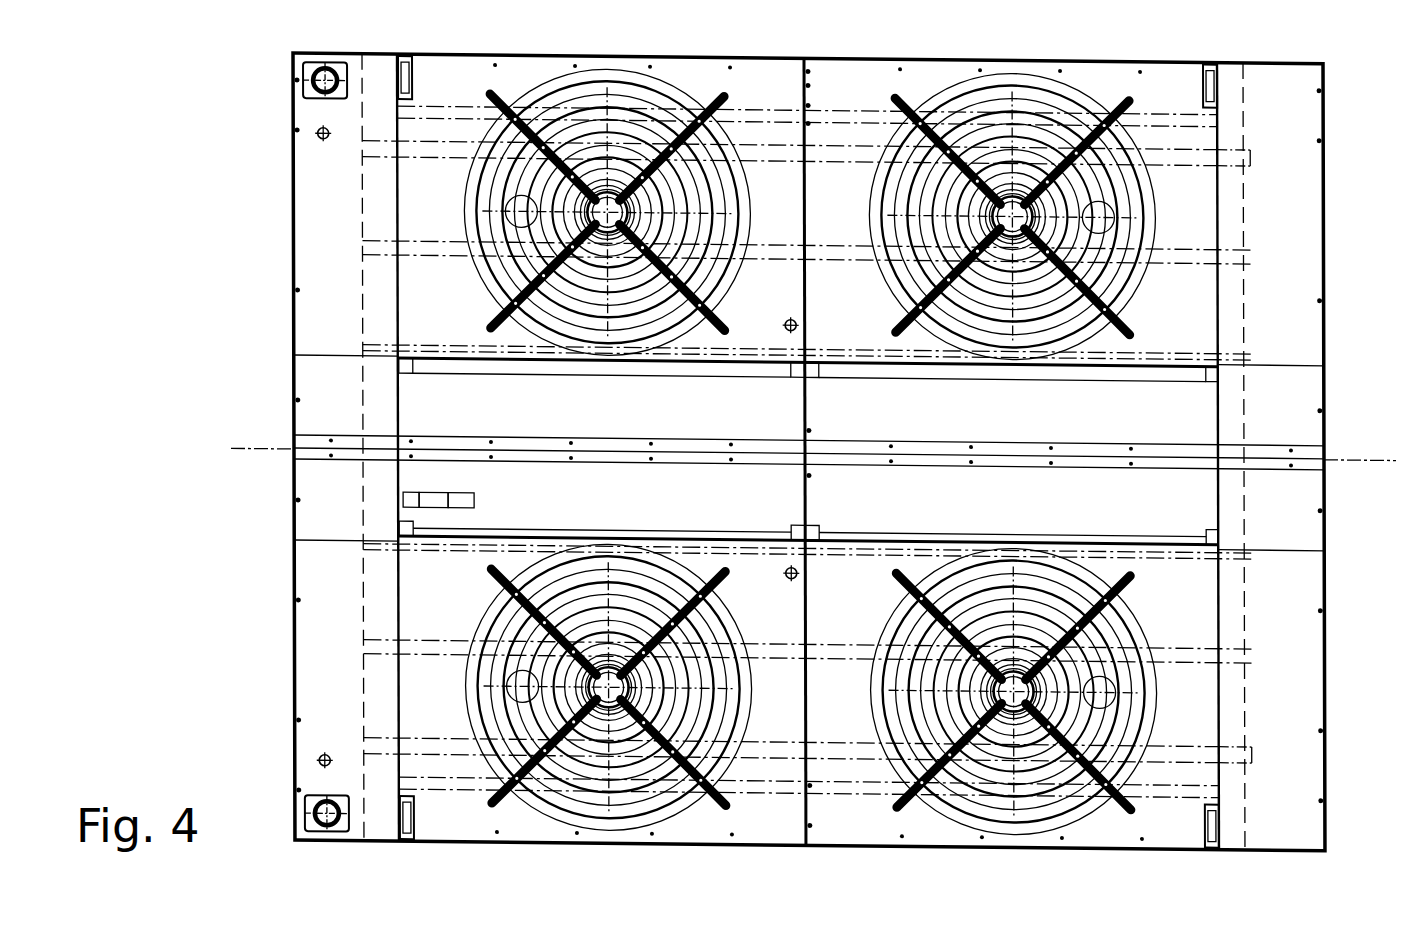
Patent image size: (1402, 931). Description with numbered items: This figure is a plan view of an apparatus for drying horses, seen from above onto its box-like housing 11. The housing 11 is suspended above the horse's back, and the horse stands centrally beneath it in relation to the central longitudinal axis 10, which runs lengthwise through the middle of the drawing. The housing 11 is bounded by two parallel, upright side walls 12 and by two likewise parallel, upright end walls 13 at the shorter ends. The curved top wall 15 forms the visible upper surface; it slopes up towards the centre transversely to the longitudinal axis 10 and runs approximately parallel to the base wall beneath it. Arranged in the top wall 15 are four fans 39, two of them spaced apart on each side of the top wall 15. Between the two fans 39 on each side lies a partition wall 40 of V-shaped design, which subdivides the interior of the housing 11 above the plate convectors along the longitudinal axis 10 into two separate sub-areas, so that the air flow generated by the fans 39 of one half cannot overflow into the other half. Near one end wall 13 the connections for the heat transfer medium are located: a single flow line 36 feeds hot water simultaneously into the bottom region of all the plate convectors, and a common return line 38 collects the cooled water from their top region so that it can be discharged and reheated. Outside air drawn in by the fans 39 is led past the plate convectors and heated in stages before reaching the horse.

The central longitudinal axis 10 is at (1337, 448).
The housing 11 is at (1277, 320).
The side wall 12 is at (1292, 56).
The end wall 13 is at (293, 701).
The top wall 15 is at (1267, 598).
The flow line 36 is at (304, 88).
The return line 38 is at (303, 797).
The fan 39 is at (600, 210).
The partition wall 40 is at (713, 796).